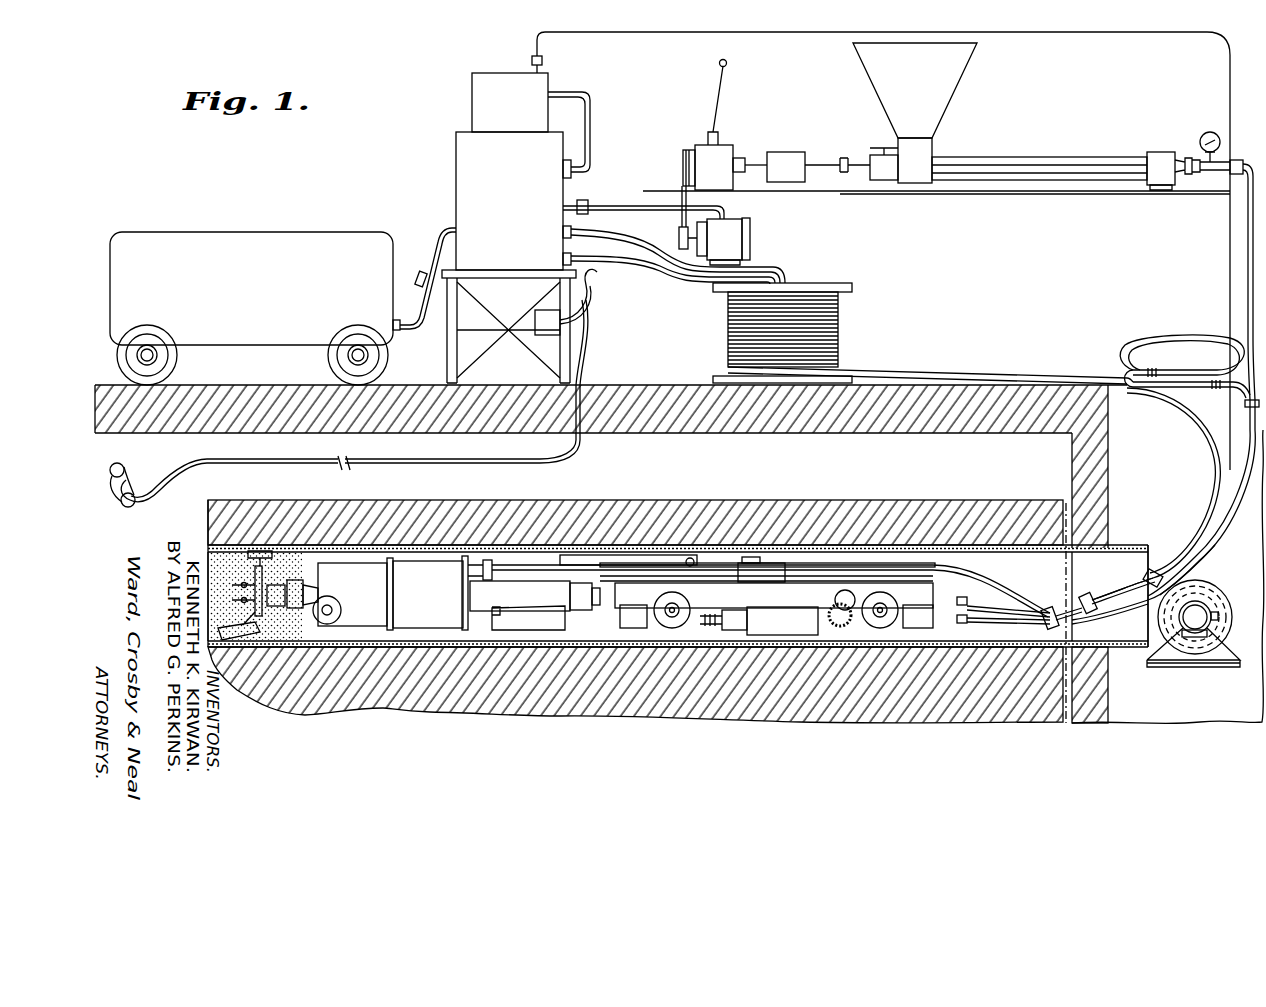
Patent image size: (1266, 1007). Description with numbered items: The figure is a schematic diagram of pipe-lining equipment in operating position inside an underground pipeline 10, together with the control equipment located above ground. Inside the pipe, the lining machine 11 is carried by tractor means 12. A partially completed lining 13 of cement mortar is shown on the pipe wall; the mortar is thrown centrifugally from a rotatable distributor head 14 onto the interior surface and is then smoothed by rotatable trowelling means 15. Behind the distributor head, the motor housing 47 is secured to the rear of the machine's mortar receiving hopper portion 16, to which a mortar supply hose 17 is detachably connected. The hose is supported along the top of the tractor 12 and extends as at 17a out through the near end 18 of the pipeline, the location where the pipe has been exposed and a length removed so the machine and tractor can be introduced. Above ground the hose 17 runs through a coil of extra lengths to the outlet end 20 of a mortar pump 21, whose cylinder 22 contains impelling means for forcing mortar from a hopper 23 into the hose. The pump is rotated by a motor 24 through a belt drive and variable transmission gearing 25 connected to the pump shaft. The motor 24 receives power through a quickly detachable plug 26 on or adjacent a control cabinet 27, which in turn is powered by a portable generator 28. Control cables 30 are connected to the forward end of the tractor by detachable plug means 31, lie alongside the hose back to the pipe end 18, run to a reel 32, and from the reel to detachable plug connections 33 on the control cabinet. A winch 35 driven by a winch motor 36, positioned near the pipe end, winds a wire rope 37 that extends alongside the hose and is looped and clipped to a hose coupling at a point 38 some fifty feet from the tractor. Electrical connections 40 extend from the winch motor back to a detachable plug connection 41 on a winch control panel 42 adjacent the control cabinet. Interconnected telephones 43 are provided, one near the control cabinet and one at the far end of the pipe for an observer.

The pipeline 10 is at (703, 545).
The lining machine 11 is at (397, 574).
The tractor means 12 is at (763, 595).
The partially completed lining 13 is at (207, 550).
The rotatable distributor head 14 is at (298, 593).
The rotatable trowelling means 15 is at (242, 636).
The mortar receiving hopper portion 16 is at (390, 593).
The mortar supply hose 17 is at (1258, 160).
The hose portion extending out of the pipe 17a is at (1112, 596).
The near end of the pipeline 18 is at (1148, 546).
The outlet end of the mortar pump 20 is at (1198, 160).
The mortar pump 21 is at (948, 157).
The cylinder 22 is at (1010, 157).
The hopper 23 is at (948, 90).
The motor 24 is at (745, 236).
The variable transmission gearing 25 is at (736, 153).
The quickly detachable plug 26 is at (596, 201).
The control cabinet 27 is at (470, 150).
The portable generator 28 is at (390, 232).
The control cables 30 is at (645, 270).
The detachable plug means 31 is at (953, 622).
The reel 32 is at (842, 333).
The detachable plug connections 33 is at (572, 257).
The winch 35 is at (1218, 615).
The winch motor 36 is at (1200, 620).
The wire rope 37 is at (1140, 605).
The wire rope attachment point 38 is at (1090, 597).
The electrical connections 40 is at (1228, 287).
The detachable plug connection 41 is at (533, 58).
The winch control panel 42 is at (472, 80).
The telephones 43 is at (597, 318).
The motor housing 47 is at (1212, 549).